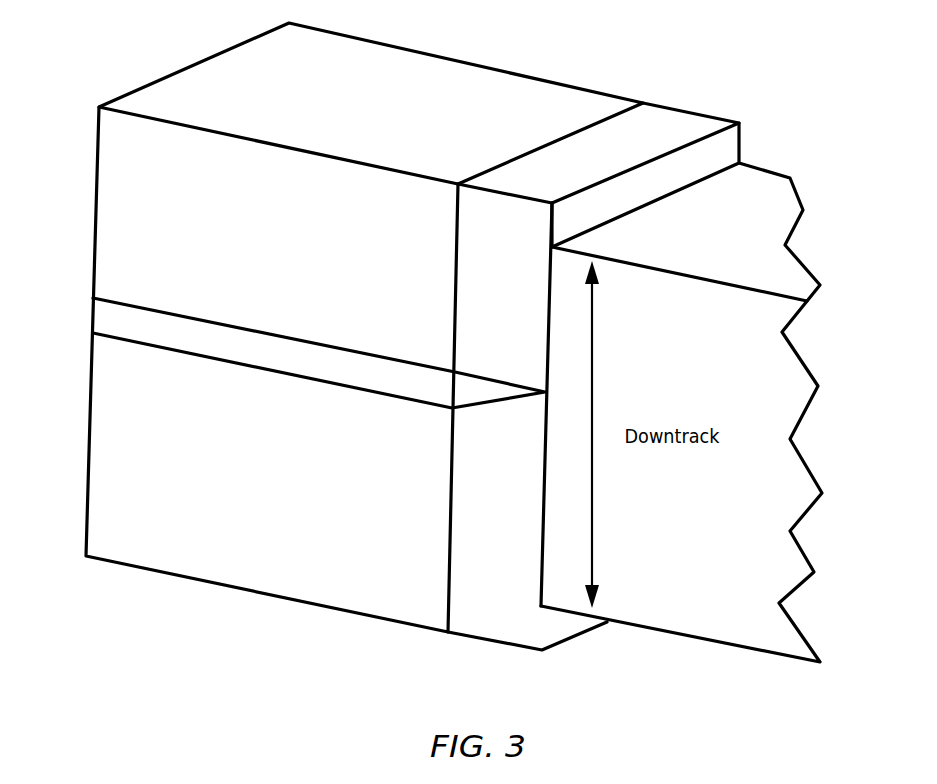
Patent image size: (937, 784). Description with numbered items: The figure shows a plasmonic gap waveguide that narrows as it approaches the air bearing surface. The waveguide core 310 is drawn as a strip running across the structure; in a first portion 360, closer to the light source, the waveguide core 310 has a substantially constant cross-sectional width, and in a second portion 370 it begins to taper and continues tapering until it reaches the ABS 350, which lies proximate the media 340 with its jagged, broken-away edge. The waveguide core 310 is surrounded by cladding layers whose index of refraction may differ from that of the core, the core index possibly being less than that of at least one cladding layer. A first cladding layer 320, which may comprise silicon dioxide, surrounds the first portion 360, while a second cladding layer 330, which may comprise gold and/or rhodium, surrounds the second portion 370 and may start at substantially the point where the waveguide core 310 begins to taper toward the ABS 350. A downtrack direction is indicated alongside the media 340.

The waveguide core 310 is at (103, 323).
The first cladding layer 320 is at (217, 63).
The second cladding layer 330 is at (657, 118).
The media 340 is at (790, 407).
The air bearing surface 350 is at (727, 153).
The first portion 360 is at (313, 305).
The second portion 370 is at (515, 357).